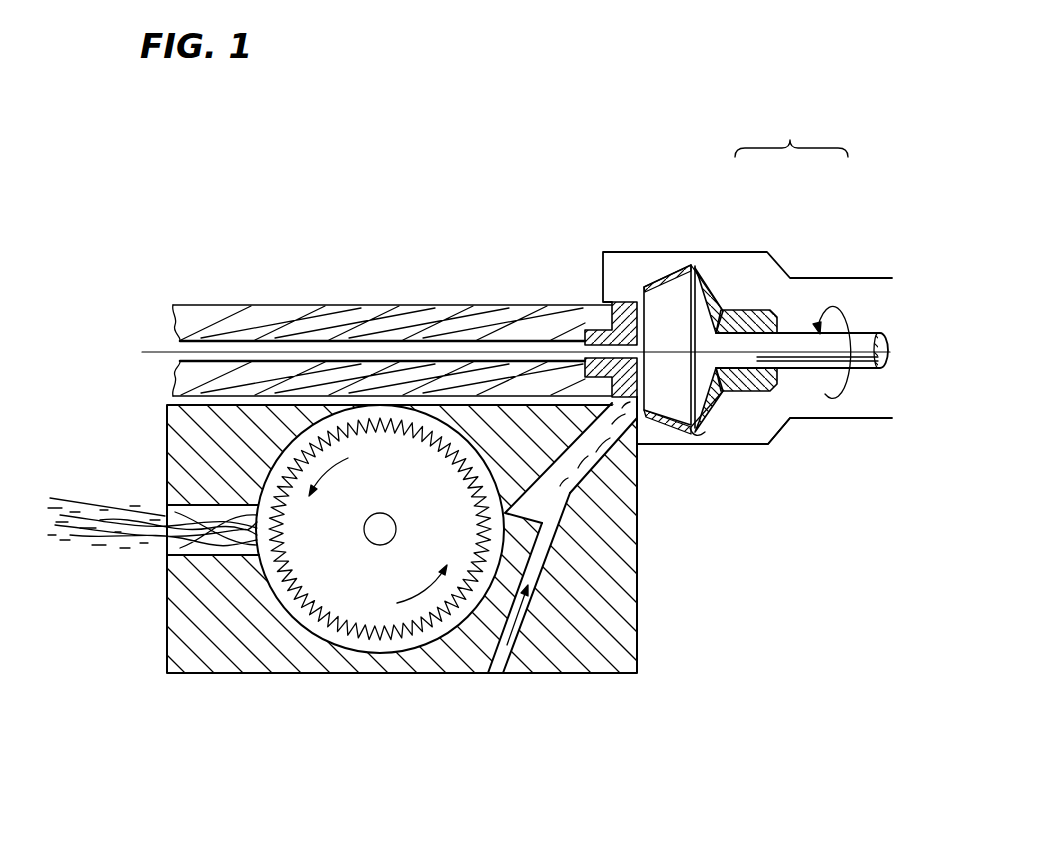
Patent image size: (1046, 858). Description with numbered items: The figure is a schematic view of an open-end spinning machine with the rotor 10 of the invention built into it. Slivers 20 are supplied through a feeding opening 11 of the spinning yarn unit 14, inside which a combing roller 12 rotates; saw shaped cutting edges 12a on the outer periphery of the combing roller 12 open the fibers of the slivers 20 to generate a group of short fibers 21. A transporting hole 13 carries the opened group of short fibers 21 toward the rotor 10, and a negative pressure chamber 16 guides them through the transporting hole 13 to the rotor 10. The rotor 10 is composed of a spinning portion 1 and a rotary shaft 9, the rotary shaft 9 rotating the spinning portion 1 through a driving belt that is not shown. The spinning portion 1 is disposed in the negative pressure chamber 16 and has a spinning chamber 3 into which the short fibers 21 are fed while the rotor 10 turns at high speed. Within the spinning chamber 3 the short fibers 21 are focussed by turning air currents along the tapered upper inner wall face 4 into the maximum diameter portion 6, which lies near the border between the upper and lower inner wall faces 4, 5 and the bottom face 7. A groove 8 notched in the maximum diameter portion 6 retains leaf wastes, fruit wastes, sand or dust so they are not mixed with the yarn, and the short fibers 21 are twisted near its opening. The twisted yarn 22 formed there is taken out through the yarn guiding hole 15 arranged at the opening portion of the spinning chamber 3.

The spinning portion 1 is at (725, 290).
The spinning chamber 3 is at (655, 298).
The upper inner wall face 4 is at (660, 288).
The lower inner wall face 5 is at (718, 302).
The maximum diameter portion 6 is at (686, 265).
The bottom face 7 is at (722, 338).
The groove 8 is at (695, 433).
The rotary shaft 9 is at (862, 322).
The rotor 10 is at (791, 131).
The feeding opening 11 is at (207, 545).
The combing roller 12 is at (317, 568).
The saw shaped cutting edges 12a is at (312, 623).
The transporting hole 13 is at (590, 530).
The spinning yarn unit 14 is at (542, 657).
The yarn guiding hole 15 is at (428, 344).
The negative pressure chamber 16 is at (768, 418).
The slivers 20 is at (91, 502).
The group of short fibers 21 is at (585, 463).
The twisted yarn 22 is at (162, 352).